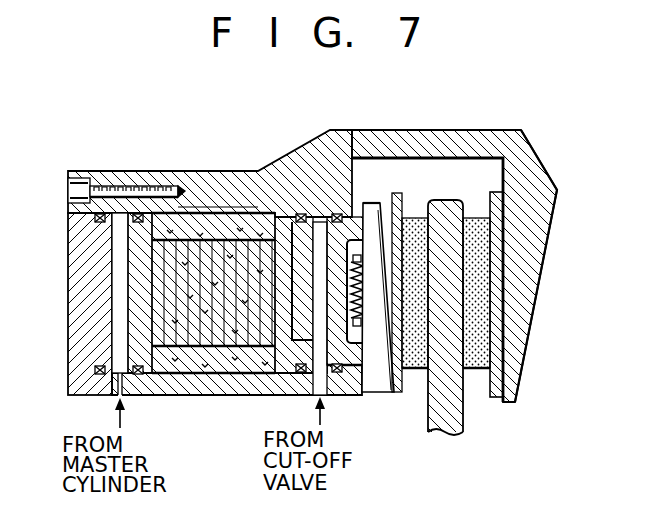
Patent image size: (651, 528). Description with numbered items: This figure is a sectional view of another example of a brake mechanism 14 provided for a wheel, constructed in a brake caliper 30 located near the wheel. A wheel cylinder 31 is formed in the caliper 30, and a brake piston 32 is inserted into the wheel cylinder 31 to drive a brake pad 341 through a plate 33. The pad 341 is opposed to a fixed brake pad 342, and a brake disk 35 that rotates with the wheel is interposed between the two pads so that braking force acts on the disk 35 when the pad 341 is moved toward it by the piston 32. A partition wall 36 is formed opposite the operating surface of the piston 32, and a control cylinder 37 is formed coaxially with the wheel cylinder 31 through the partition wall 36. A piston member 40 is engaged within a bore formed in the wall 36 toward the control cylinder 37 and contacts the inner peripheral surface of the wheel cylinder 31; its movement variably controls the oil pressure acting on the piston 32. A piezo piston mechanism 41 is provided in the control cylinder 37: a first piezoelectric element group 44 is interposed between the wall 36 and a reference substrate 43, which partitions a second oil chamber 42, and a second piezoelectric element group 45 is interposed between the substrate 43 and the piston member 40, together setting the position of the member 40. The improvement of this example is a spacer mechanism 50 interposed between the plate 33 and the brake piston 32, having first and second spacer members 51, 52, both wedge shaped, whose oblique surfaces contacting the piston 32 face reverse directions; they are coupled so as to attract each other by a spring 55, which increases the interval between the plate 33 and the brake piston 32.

The brake mechanism 14 is at (544, 146).
The brake caliper 30 is at (423, 146).
The wheel cylinder 31 is at (300, 218).
The brake piston 32 is at (320, 215).
The plate 33 is at (396, 216).
The brake pad 341 is at (422, 217).
The fixed brake pad 342 is at (490, 347).
The brake disk 35 is at (456, 423).
The partition wall 36 is at (284, 226).
The control cylinder 37 is at (203, 216).
The piston member 40 is at (292, 375).
The piezo piston mechanism 41 is at (184, 236).
The second oil chamber 42 is at (112, 240).
The reference substrate 43 is at (137, 336).
The first piezoelectric element group 44 is at (192, 373).
The second piezoelectric element group 45 is at (155, 289).
The spacer mechanism 50 is at (358, 387).
The first spacer member 51 is at (370, 205).
The second spacer member 52 is at (362, 392).
The spring 55 is at (386, 378).